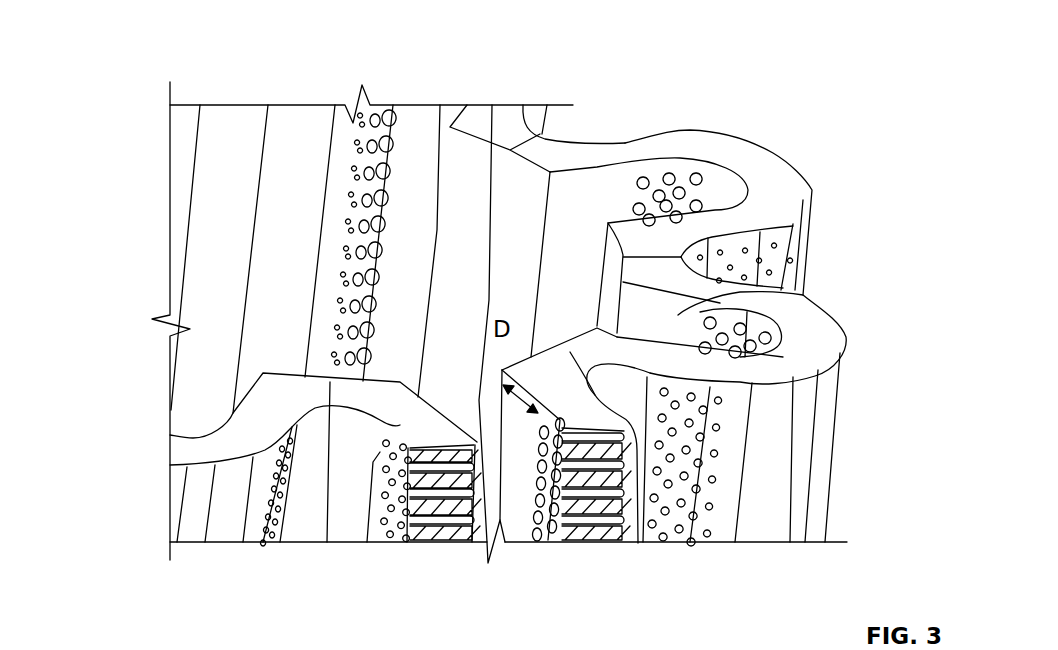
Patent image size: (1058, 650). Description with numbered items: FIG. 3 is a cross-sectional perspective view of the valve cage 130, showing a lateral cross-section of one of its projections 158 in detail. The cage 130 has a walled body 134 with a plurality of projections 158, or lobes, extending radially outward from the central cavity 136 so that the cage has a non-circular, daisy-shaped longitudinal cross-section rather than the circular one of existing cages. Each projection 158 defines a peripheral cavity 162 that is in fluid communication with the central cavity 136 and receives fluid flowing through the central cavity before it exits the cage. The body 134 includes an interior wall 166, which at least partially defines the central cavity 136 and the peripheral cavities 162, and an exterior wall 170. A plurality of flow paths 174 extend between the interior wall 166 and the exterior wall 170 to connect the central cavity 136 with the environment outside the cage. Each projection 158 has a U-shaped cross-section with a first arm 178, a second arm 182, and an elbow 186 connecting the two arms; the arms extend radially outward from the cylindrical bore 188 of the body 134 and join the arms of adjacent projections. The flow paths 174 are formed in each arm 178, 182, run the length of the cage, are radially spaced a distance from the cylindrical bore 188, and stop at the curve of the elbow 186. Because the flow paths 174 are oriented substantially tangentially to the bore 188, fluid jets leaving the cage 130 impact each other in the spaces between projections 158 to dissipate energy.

The valve cage 130 is at (143, 32).
The walled body 134 is at (710, 150).
The central cavity 136 is at (293, 194).
The projection 158 is at (793, 226).
The peripheral cavity 162 is at (612, 192).
The interior wall 166 is at (522, 198).
The exterior wall 170 is at (793, 521).
The flow path 174 is at (661, 167).
The first arm 178 is at (718, 290).
The second arm 182 is at (730, 380).
The elbow 186 is at (817, 353).
The cylindrical bore 188 is at (466, 190).